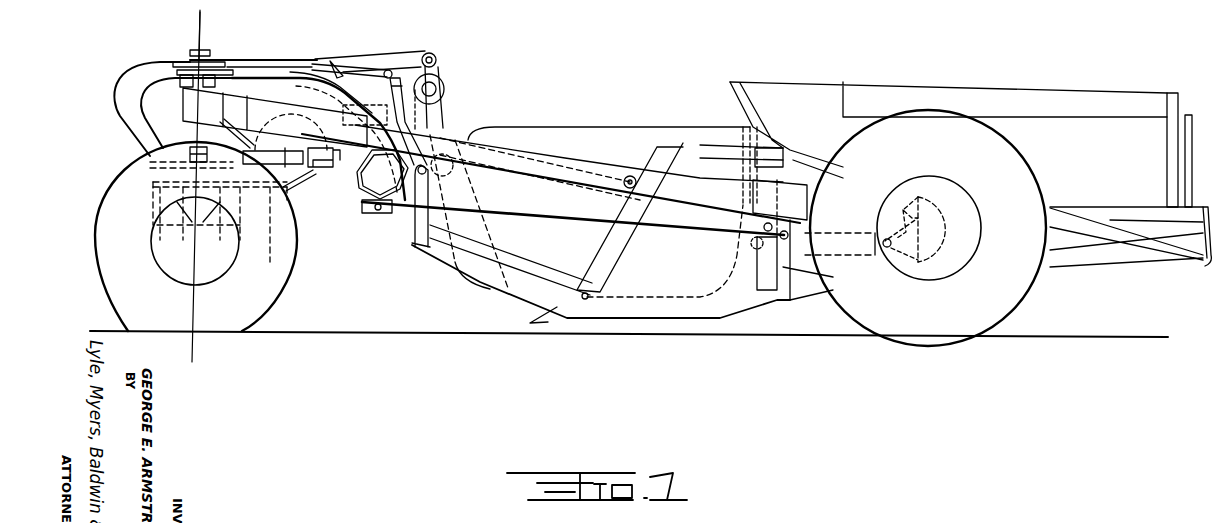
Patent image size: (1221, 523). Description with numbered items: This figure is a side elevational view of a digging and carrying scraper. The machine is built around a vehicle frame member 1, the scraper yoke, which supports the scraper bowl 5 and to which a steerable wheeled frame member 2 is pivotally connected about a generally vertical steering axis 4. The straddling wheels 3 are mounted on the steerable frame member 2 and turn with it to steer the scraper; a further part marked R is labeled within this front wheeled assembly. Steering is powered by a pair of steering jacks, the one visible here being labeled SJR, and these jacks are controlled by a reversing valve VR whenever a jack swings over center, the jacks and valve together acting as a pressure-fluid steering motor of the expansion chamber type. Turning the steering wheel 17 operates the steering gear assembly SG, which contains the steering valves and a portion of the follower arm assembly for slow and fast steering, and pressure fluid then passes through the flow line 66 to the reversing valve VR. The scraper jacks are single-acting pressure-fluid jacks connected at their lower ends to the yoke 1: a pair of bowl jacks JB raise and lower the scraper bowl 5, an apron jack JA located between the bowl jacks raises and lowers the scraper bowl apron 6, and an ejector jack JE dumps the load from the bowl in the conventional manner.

The vehicle frame member 1 is at (257, 82).
The steerable wheeled frame member 2 is at (127, 105).
The straddling wheels 3 is at (284, 281).
The steering axis 4 is at (197, 22).
The scraper bowl 5 is at (592, 129).
The scraper bowl apron 6 is at (497, 289).
The steering wheel 17 is at (332, 60).
The flow line 66 is at (236, 58).
The steering gear R is at (200, 162).
The steering gear assembly SG is at (317, 106).
The steering joint rod SJR is at (268, 155).
The reversing valve VR is at (324, 166).
The bowl jack JB is at (375, 181).
The apron jack JA is at (370, 200).
The ejector jack JE is at (846, 258).